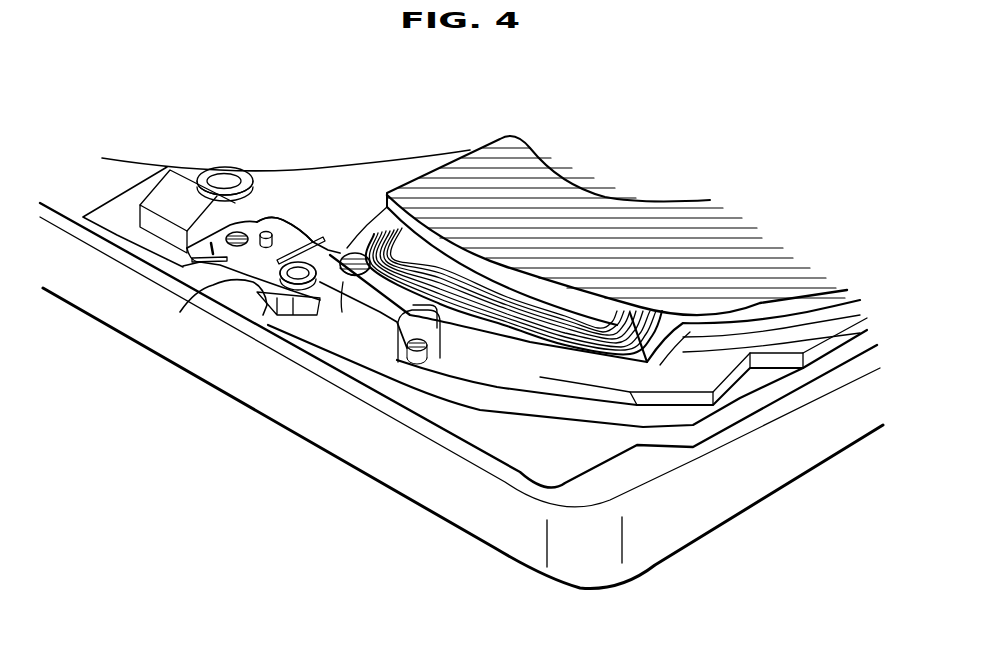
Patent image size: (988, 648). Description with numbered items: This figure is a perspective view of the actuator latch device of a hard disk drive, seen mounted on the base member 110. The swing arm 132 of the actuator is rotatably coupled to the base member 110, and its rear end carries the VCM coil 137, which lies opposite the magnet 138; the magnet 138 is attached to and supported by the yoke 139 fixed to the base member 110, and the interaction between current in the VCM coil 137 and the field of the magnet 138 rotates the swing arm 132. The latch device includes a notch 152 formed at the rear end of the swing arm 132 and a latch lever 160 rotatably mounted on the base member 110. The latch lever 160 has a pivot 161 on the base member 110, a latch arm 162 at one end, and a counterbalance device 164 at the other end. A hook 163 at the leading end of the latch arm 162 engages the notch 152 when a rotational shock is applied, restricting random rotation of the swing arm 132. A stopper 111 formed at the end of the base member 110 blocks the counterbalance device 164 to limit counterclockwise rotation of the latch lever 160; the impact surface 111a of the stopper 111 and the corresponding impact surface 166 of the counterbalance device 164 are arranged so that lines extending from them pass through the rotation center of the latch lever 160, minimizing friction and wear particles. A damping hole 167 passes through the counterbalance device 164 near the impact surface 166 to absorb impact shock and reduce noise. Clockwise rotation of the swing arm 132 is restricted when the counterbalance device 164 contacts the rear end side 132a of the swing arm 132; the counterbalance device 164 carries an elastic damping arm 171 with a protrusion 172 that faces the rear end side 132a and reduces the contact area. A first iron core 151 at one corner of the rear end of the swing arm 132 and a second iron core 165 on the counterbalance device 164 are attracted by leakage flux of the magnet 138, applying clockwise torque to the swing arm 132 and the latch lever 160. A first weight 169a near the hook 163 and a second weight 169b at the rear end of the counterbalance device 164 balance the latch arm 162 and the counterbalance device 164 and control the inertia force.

The base member 110 is at (647, 543).
The stopper 111 is at (200, 290).
The impact surface 111a is at (213, 282).
The swing arm 132 is at (607, 353).
The rear end side 132a is at (345, 247).
The VCM coil 137 is at (650, 360).
The magnet 138 is at (783, 320).
The yoke 139 is at (708, 368).
The first iron core 151 is at (366, 254).
The notch 152 is at (406, 275).
The latch lever 160 is at (258, 300).
The pivot 161 is at (279, 286).
The latch arm 162 is at (345, 318).
The hook 163 is at (437, 342).
The counterbalance device 164 is at (266, 225).
The second iron core 165 is at (236, 231).
The impact surface 166 is at (187, 267).
The damping hole 167 is at (177, 177).
The first weight 169a is at (400, 348).
The second weight 169b is at (213, 240).
The damping arm 171 is at (278, 217).
The protrusion 172 is at (311, 245).